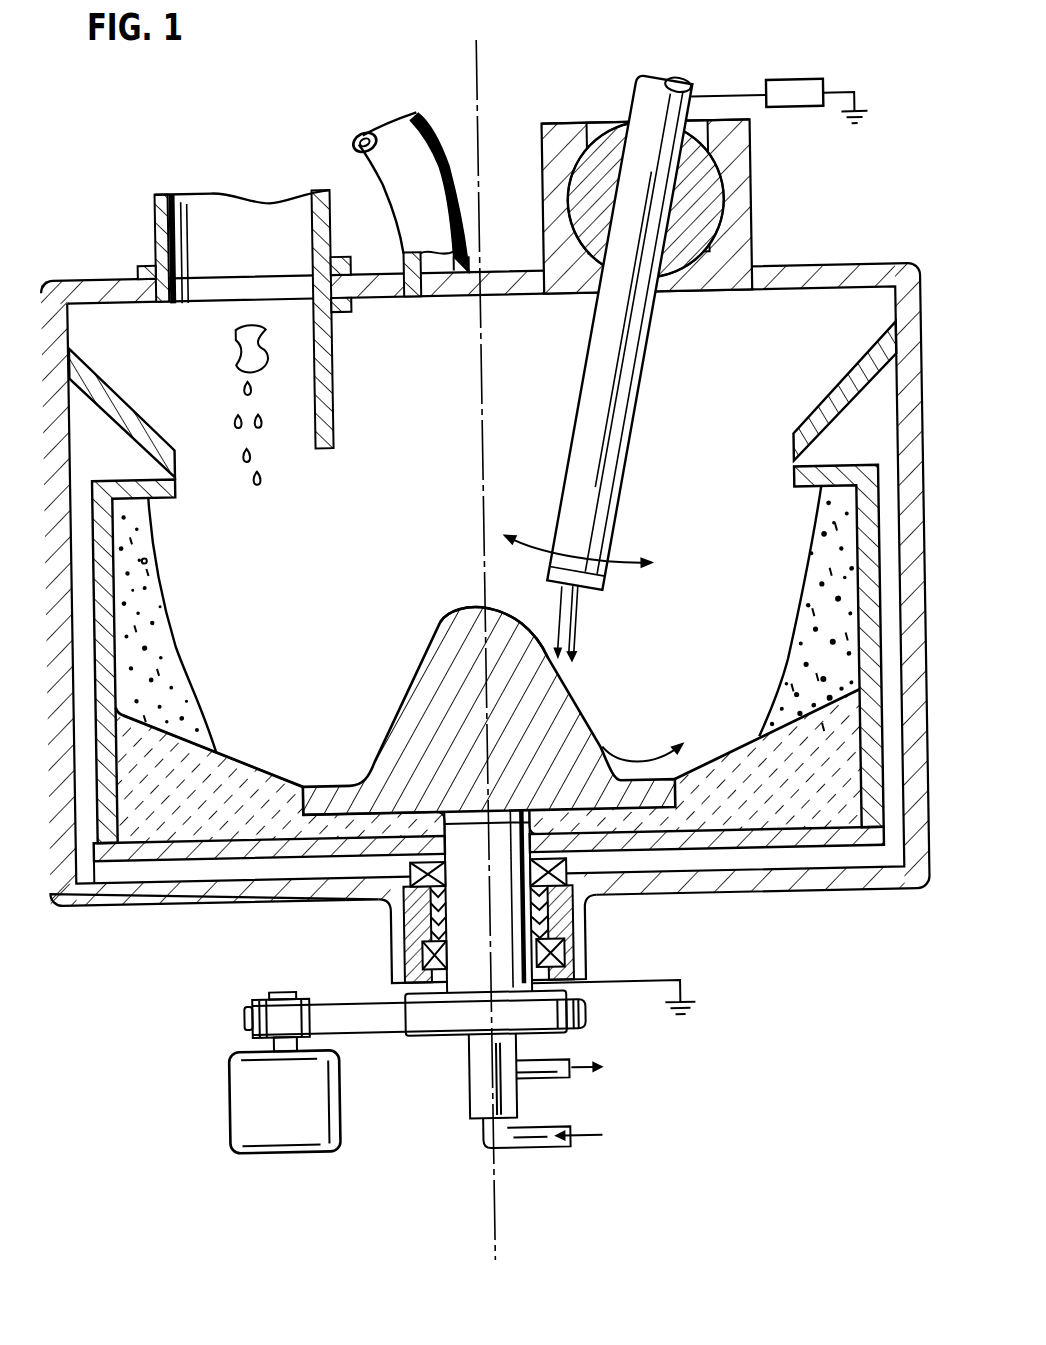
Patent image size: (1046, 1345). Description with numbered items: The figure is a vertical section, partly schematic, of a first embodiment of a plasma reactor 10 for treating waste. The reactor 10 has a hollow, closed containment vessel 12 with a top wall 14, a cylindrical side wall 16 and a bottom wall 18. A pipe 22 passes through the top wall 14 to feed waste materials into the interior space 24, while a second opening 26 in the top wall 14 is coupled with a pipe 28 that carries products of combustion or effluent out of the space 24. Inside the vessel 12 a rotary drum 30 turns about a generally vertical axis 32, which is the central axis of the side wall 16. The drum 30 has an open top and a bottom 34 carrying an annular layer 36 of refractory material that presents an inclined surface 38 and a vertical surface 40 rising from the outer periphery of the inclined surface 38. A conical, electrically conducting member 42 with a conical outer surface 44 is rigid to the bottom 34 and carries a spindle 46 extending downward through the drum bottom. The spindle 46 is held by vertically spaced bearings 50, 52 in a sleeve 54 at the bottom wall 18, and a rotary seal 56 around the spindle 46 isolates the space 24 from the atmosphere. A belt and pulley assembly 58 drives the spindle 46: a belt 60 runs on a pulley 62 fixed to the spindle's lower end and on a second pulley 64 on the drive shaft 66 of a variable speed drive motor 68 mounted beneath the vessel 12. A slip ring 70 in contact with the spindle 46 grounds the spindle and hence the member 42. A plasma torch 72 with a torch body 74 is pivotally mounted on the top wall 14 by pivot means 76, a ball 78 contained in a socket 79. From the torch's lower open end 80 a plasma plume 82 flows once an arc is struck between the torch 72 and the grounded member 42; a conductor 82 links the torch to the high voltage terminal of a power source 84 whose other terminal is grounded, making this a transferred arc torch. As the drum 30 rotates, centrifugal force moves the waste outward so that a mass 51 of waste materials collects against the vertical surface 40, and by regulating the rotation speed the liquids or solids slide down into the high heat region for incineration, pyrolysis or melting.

The plasma reactor 10 is at (312, 151).
The containment vessel 12 is at (145, 905).
The top wall 14 is at (385, 268).
The cylindrical side wall 16 is at (77, 478).
The bottom wall 18 is at (248, 890).
The pipe 22 is at (161, 218).
The interior space 24 is at (351, 489).
The second opening 26 is at (429, 292).
The pipe 28 is at (427, 121).
The rotary drum 30 is at (102, 834).
The vertical axis 32 is at (490, 440).
The bottom 34 is at (309, 856).
The layer of refractory material 36 is at (208, 747).
The inclined surface 38 is at (275, 763).
The vertical surface 40 is at (120, 605).
The conical electrical conducting member 42 is at (461, 630).
The conical outer surface 44 is at (411, 687).
The spindle 46 is at (459, 984).
The bearing 50 is at (556, 876).
The mass of waste materials 51 is at (148, 554).
The bearing 52 is at (548, 954).
The sleeve 54 is at (409, 936).
The rotary seal 56 is at (510, 928).
The belt and pulley assembly 58 is at (407, 1053).
The belt 60 is at (331, 1012).
The pulley 62 is at (452, 1034).
The second pulley 64 is at (309, 1034).
The drive shaft 66 is at (265, 990).
The variable speed drive motor 68 is at (330, 1144).
The slip ring 70 is at (518, 984).
The plasma torch 72 is at (590, 574).
The torch body 74 is at (622, 505).
The pivot means 76 is at (615, 118).
The ball 78 is at (580, 177).
The socket 79 is at (749, 173).
The lower open end 80 is at (592, 595).
The plasma plume 82 is at (732, 101).
The power source 84 is at (798, 86).